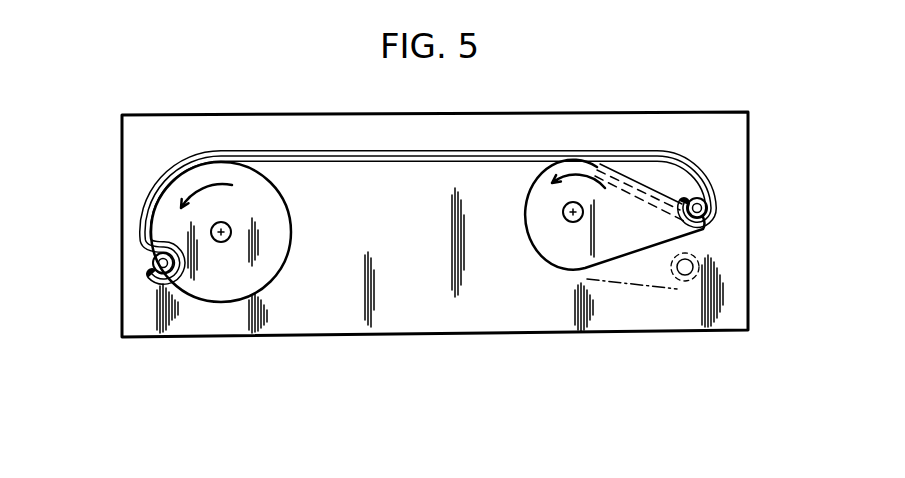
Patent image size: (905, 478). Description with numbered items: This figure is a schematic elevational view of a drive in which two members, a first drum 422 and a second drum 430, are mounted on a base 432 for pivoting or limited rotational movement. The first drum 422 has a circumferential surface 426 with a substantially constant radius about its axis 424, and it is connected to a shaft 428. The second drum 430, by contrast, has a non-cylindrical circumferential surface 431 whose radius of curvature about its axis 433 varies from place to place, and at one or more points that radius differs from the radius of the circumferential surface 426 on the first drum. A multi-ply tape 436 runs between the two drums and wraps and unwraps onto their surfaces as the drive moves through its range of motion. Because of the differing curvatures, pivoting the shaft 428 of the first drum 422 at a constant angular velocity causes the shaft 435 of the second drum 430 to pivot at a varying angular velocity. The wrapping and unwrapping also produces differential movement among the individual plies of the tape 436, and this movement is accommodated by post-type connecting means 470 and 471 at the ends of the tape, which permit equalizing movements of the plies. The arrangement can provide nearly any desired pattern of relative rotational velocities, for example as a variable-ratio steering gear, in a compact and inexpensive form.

The base 432 is at (598, 112).
The tape 436 is at (420, 155).
The circumferential surface 426 is at (292, 238).
The axis 424 is at (225, 229).
The shaft 428 is at (227, 240).
The first member or drum 422 is at (203, 283).
The post-type connecting means 470 is at (156, 270).
The post-type connecting means 471 is at (702, 206).
The second member or drum 430 is at (633, 235).
The shaft 435 is at (569, 220).
The axis 433 is at (571, 222).
The circumferential surface 431 is at (627, 265).